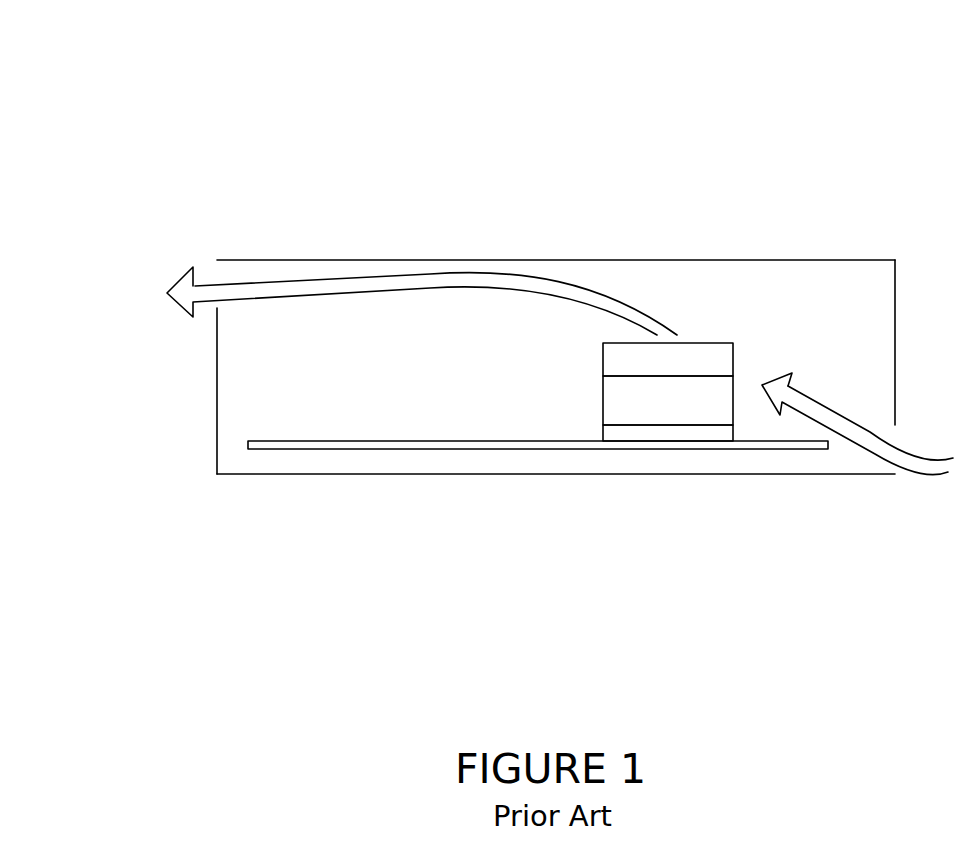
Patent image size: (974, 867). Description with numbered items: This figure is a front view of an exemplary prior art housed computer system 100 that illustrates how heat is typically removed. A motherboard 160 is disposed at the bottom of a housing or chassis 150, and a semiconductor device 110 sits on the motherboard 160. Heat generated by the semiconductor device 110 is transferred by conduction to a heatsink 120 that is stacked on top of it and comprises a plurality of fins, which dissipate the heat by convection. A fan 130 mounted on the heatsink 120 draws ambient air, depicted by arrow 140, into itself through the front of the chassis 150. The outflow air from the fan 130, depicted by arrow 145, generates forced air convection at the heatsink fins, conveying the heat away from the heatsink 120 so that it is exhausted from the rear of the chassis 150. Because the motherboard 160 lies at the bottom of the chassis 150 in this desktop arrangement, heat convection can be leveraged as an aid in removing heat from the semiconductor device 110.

The housed computer system 100 is at (122, 62).
The semiconductor device 110 is at (618, 433).
The heatsink 120 is at (612, 395).
The fan 130 is at (612, 358).
The arrow 140 is at (923, 467).
The arrow 145 is at (208, 292).
The chassis 150 is at (830, 260).
The motherboard 160 is at (303, 449).